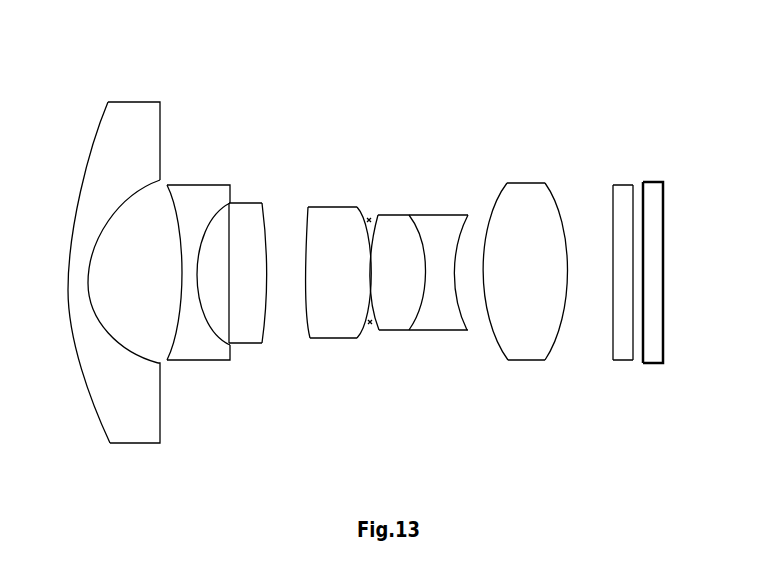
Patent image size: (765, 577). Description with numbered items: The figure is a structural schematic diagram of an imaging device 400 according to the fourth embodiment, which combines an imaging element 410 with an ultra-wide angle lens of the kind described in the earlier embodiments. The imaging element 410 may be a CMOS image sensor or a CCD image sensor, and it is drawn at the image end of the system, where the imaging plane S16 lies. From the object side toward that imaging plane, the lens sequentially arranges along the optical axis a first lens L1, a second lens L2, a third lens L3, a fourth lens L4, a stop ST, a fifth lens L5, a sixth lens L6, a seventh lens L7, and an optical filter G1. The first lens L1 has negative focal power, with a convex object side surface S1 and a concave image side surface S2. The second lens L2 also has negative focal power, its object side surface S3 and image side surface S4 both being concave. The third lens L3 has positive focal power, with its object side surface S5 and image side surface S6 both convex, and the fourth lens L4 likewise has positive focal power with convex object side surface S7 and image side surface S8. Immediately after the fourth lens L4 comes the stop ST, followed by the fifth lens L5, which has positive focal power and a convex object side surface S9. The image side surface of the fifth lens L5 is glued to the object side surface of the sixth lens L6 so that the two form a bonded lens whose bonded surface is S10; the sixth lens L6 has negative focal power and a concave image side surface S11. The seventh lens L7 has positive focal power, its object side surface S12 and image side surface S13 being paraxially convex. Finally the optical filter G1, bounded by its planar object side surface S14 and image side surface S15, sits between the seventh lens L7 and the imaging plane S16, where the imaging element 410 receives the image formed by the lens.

The imaging device 400 is at (75, 86).
The imaging element 410 is at (652, 190).
The first lens L1 is at (132, 140).
The second lens L2 is at (196, 232).
The third lens L3 is at (240, 233).
The fourth lens L4 is at (330, 232).
The fifth lens L5 is at (397, 230).
The sixth lens L6 is at (438, 232).
The seventh lens L7 is at (530, 232).
The optical filter G1 is at (625, 233).
The stop ST is at (372, 302).
The object side surface of the first lens S1 is at (70, 303).
The image side surface of the first lens S2 is at (95, 310).
The object side surface of the second lens S3 is at (182, 303).
The image side surface of the second lens S4 is at (203, 313).
The object side surface of the third lens S5 is at (232, 313).
The image side surface of the third lens S6 is at (263, 313).
The object side surface of the fourth lens S7 is at (307, 338).
The image side surface of the fourth lens S8 is at (367, 300).
The object side surface of the fifth lens S9 is at (377, 305).
The bonded surface S10 is at (421, 310).
The image side surface of the sixth lens S11 is at (460, 300).
The object side surface of the seventh lens S12 is at (485, 300).
The image side surface of the seventh lens S13 is at (563, 310).
The object side surface of the optical filter S14 is at (613, 310).
The image side surface of the optical filter S15 is at (632, 310).
The imaging plane S16 is at (643, 302).